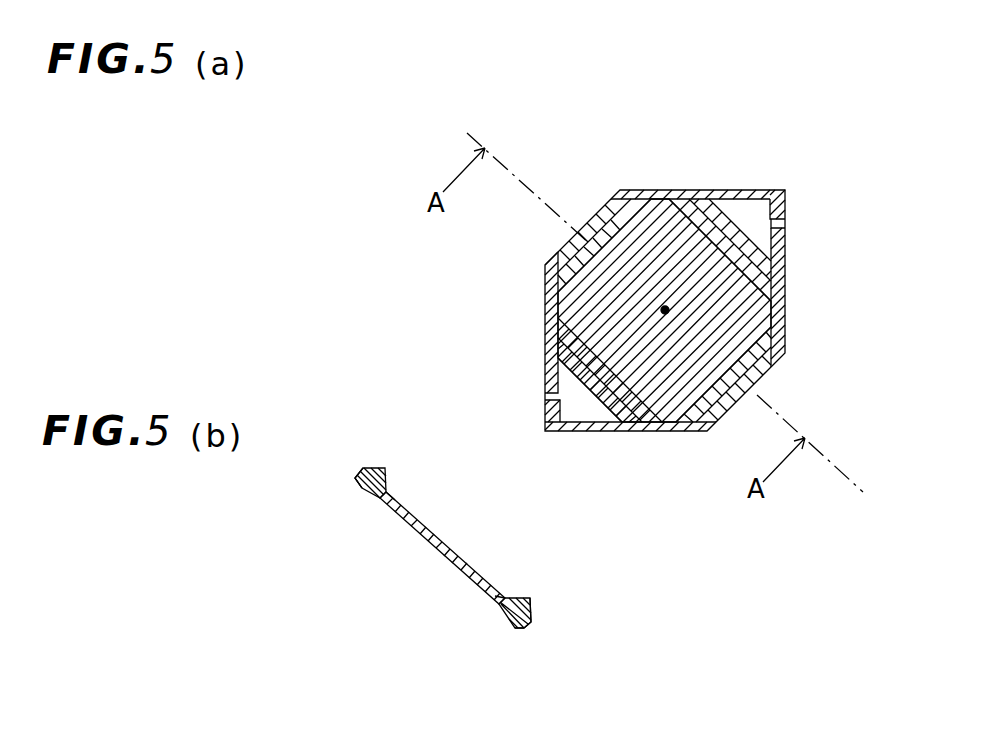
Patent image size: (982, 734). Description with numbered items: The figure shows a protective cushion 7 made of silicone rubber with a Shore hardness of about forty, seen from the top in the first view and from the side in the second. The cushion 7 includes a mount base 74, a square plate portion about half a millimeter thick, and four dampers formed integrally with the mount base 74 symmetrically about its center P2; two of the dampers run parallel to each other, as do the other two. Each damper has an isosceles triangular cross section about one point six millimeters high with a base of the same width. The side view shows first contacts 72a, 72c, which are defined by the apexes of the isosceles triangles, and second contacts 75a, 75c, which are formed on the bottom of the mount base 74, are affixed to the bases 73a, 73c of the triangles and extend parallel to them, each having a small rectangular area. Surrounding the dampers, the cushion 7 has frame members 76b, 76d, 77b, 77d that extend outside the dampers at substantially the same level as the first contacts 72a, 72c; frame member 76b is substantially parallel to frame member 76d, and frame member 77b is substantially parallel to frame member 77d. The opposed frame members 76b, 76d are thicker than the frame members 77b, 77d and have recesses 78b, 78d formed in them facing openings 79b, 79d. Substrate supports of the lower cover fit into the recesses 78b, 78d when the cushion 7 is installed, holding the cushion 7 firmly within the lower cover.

The protective cushion 7 is at (672, 190).
The mount base 74 is at (641, 190).
The first contact 72a is at (383, 468).
The first contact 72c is at (530, 598).
The base 73a is at (404, 493).
The base 73c is at (510, 587).
The second contact 75a is at (358, 488).
The second contact 75c is at (500, 610).
The frame member 76b is at (545, 323).
The frame member 76d is at (786, 262).
The frame member 77b is at (615, 432).
The frame member 77d is at (730, 190).
The recess 78b is at (545, 392).
The recess 78d is at (787, 215).
The opening 79b is at (585, 432).
The opening 79d is at (778, 190).
The center of the mount base P2 is at (668, 310).